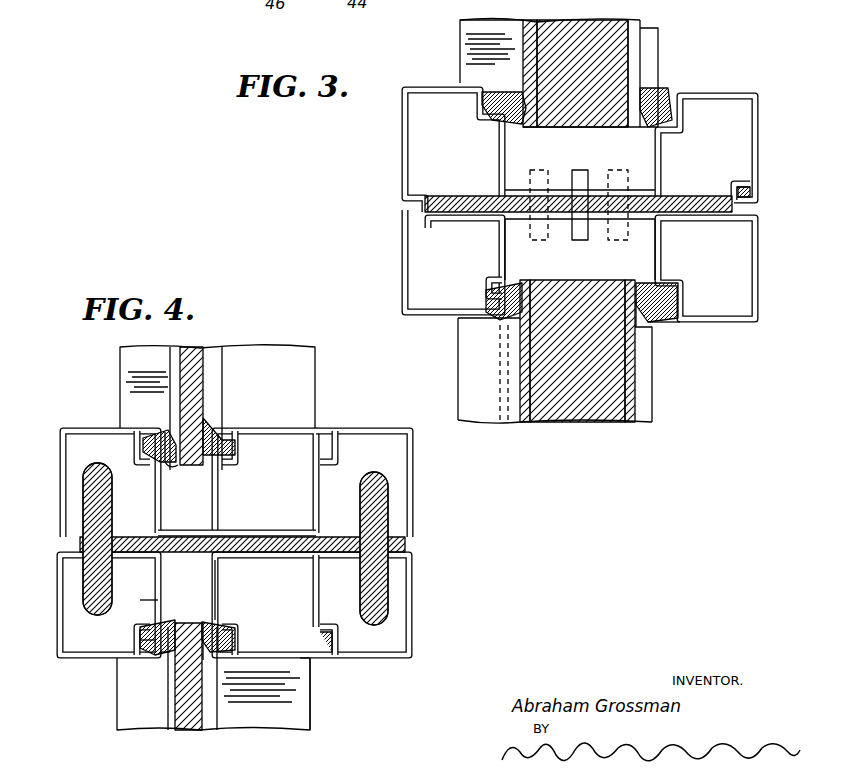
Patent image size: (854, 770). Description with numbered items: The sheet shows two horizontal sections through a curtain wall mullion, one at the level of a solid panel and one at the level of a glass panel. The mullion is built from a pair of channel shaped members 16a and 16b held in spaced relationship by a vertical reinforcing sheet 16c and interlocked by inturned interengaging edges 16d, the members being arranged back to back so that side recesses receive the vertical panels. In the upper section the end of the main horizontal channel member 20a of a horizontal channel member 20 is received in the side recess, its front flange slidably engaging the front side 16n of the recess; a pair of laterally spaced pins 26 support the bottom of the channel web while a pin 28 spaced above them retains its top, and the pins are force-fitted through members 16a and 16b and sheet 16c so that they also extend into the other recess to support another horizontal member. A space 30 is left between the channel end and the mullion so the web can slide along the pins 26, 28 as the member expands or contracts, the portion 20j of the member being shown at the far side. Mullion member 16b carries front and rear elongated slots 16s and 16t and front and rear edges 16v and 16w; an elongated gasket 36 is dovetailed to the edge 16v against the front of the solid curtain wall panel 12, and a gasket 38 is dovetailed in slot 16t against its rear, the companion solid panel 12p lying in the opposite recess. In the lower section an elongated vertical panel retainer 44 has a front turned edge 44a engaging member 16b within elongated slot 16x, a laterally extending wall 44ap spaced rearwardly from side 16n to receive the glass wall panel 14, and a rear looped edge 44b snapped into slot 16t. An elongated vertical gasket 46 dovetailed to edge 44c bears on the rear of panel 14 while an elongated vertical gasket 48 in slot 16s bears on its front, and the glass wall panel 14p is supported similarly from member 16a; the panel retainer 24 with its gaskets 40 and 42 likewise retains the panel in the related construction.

In FIG. 3, the solid curtain wall panel 12 is at (600, 424).
In FIG. 3, the solid panel 12p is at (640, 52).
In FIG. 4, the glass wall panel 14 is at (175, 668).
In FIG. 4, the glass wall panel 14p is at (182, 377).
In FIG. 3, the channel shaped mullion member 16a is at (403, 141).
In FIG. 4, the channel shaped mullion member 16a is at (62, 475).
In FIG. 3, the channel shaped mullion member 16b is at (403, 252).
In FIG. 4, the channel shaped mullion member 16b is at (58, 597).
In FIG. 3, the vertical reinforcing sheet 16c is at (690, 198).
In FIG. 4, the vertical reinforcing sheet 16c is at (392, 497).
In FIG. 3, the inturned interengaging edge 16d is at (750, 185).
In FIG. 3, the front side of recess 16n is at (660, 245).
In FIG. 4, the front side of recess 16n is at (150, 602).
In FIG. 3, the front elongated slot 16s is at (497, 281).
In FIG. 4, the front elongated slot 16s is at (145, 646).
In FIG. 3, the rear elongated slot 16t is at (670, 320).
In FIG. 4, the rear elongated slot 16t is at (330, 644).
In FIG. 3, the front edge 16v is at (500, 318).
In FIG. 4, the front edge 16v is at (168, 652).
In FIG. 3, the rear edge 16w is at (638, 335).
In FIG. 4, the elongated slot 16x is at (162, 533).
In FIG. 3, the horizontal channel member 20 is at (455, 50).
In FIG. 3, the main horizontal channel member 20a is at (580, 249).
In FIG. 3, the insulating block portion 20j is at (652, 405).
In FIG. 4, the panel retainer 24 is at (310, 713).
In FIG. 3, the laterally spaced pins 26 is at (534, 168).
In FIG. 3, the pin 28 is at (578, 168).
In FIG. 3, the space 30 is at (500, 214).
In FIG. 3, the elongated gasket 36 is at (494, 300).
In FIG. 3, the gasket 38 is at (660, 92).
In FIG. 4, the gasket 40 is at (208, 720).
In FIG. 4, the gasket 42 is at (172, 722).
In FIG. 4, the elongated vertical panel retainer 44 is at (275, 664).
In FIG. 4, the front turned edge 44a is at (155, 541).
In FIG. 4, the laterally extending wall 44ap is at (220, 574).
In FIG. 4, the rear looped edge 44b is at (312, 660).
In FIG. 4, the edge of panel retainer 44c is at (222, 640).
In FIG. 4, the elongated vertical gasket 46 is at (212, 426).
In FIG. 4, the elongated vertical gasket 48 is at (145, 449).